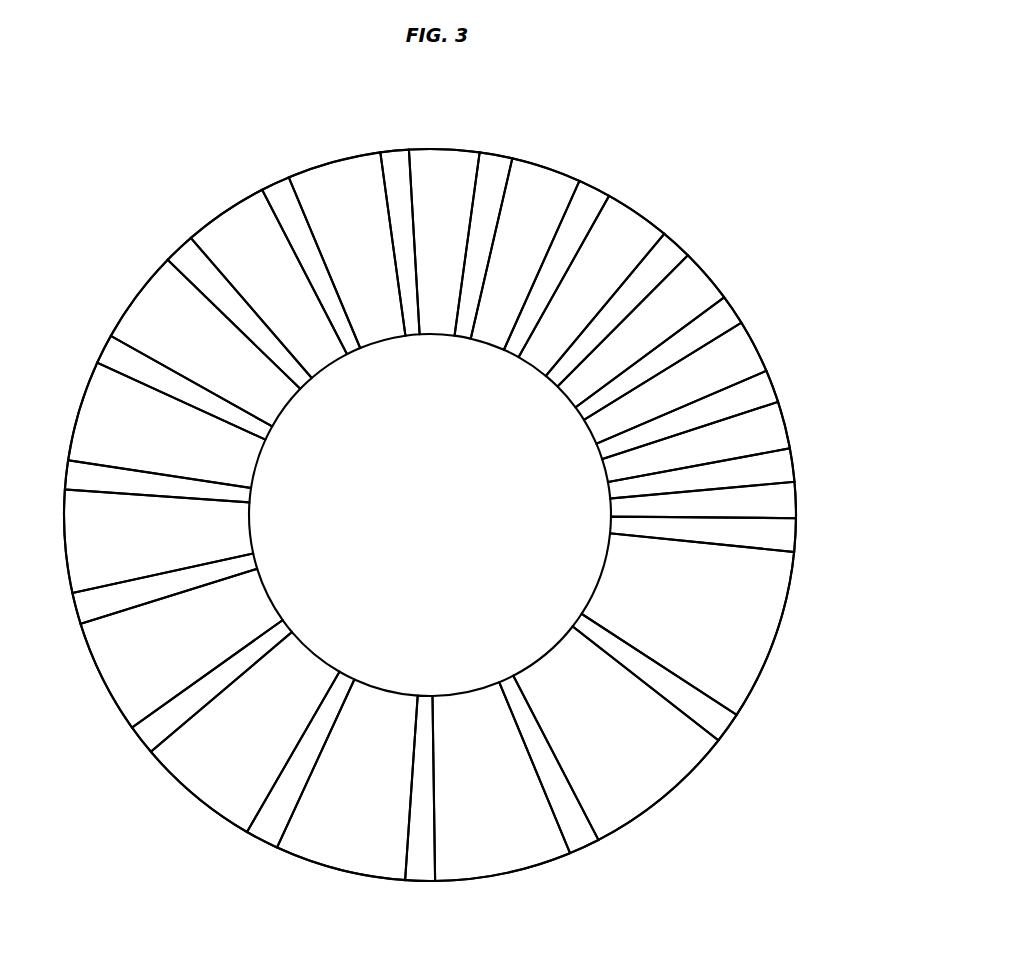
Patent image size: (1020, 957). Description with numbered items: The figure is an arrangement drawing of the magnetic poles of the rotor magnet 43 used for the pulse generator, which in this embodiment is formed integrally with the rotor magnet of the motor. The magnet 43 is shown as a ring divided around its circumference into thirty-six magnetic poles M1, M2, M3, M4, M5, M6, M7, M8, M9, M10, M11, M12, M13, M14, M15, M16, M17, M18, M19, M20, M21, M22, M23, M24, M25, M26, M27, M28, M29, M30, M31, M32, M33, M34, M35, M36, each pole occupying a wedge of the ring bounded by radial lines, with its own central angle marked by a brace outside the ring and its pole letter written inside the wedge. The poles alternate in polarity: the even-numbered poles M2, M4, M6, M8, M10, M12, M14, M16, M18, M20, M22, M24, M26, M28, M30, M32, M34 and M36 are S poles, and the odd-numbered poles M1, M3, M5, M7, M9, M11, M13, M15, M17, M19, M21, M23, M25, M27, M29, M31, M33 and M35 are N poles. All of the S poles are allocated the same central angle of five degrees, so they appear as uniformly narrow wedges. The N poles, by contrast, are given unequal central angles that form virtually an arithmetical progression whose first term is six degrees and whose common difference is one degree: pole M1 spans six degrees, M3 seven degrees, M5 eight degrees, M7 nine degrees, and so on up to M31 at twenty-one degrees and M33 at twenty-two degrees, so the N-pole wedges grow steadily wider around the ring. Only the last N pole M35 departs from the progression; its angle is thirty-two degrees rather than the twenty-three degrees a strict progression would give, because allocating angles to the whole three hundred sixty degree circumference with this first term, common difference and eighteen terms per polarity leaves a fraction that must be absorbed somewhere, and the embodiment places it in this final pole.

The rotor magnet for the pulse generator 43 is at (660, 130).
The magnetic pole M1 is at (677, 500).
The magnetic pole M2 is at (663, 479).
The magnetic pole M3 is at (671, 446).
The magnetic pole M4 is at (651, 427).
The magnetic pole M5 is at (654, 390).
The magnetic pole M6 is at (627, 379).
The magnetic pole M7 is at (623, 343).
The magnetic pole M8 is at (591, 336).
The magnetic pole M9 is at (579, 300).
The magnetic pole M10 is at (537, 298).
The magnetic pole M11 is at (508, 271).
The magnetic pole M12 is at (475, 304).
The magnetic pole M13 is at (431, 263).
The magnetic pole M14 is at (401, 304).
The magnetic pole M15 is at (350, 270).
The magnetic pole M16 is at (331, 297).
The magnetic pole M17 is at (278, 299).
The magnetic pole M18 is at (269, 340).
The magnetic pole M19 is at (219, 360).
The magnetic pole M20 is at (221, 405).
The magnetic pole M21 is at (184, 449).
The magnetic pole M22 is at (199, 488).
The magnetic pole M23 is at (183, 547).
The magnetic pole M24 is at (205, 579).
The magnetic pole M25 is at (202, 649).
The magnetic pole M26 is at (245, 663).
The magnetic pole M27 is at (265, 729).
The magnetic pole M28 is at (322, 728).
The magnetic pole M29 is at (377, 772).
The magnetic pole M30 is at (426, 751).
The magnetic pole M31 is at (501, 762).
The magnetic pole M32 is at (529, 733).
The magnetic pole M33 is at (616, 715).
The magnetic pole M34 is at (621, 655).
The magnetic pole M35 is at (686, 588).
The magnetic pole M36 is at (662, 526).